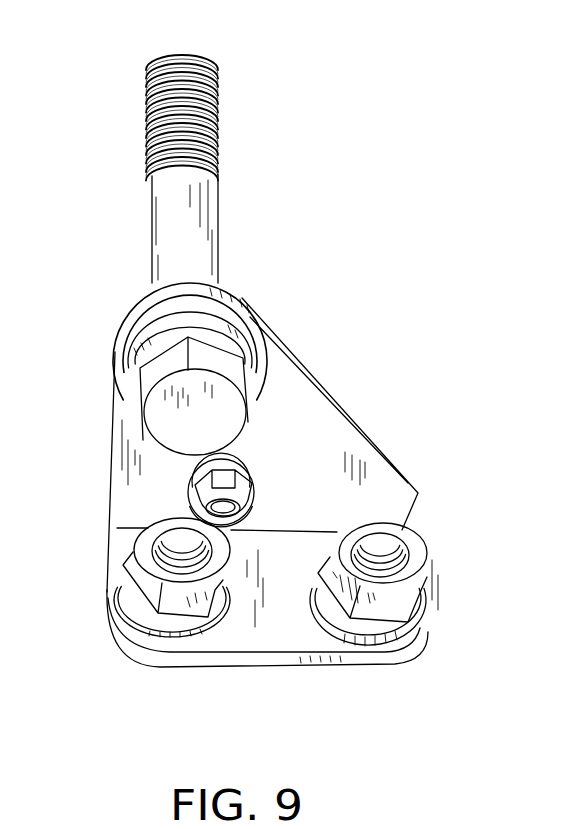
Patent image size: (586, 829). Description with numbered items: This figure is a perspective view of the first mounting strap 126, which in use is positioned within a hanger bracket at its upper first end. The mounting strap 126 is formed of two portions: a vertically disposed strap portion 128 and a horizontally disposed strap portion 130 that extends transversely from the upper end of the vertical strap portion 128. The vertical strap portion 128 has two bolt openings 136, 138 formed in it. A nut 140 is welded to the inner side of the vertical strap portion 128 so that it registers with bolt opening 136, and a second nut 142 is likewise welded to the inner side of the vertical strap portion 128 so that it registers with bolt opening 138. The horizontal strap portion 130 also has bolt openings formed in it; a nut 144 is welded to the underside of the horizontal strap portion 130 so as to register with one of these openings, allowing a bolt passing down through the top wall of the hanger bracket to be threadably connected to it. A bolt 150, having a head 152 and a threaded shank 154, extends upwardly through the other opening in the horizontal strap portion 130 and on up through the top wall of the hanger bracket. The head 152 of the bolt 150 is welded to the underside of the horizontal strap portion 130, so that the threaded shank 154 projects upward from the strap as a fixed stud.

The first mounting strap 126 is at (345, 380).
The vertically disposed strap portion 128 is at (298, 625).
The horizontally disposed strap portion 130 is at (370, 467).
The bolt opening 136 is at (388, 562).
The bolt opening 138 is at (112, 588).
The nut 140 is at (405, 608).
The nut 142 is at (188, 614).
The nut 144 is at (247, 472).
The bolt 150 is at (222, 247).
The head 152 is at (197, 387).
The threaded shank 154 is at (215, 145).